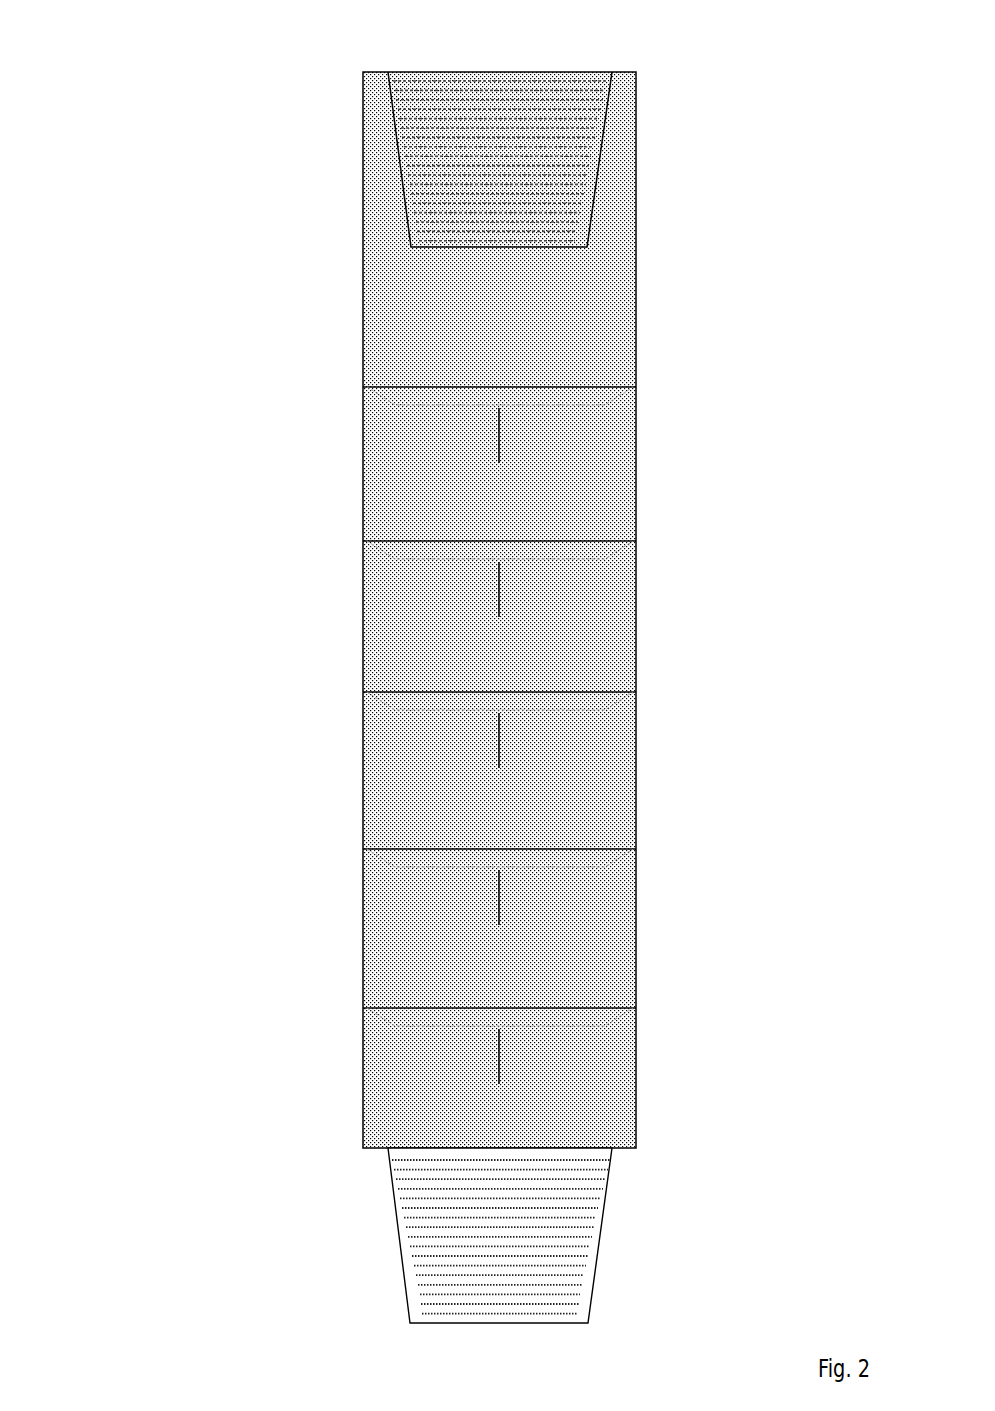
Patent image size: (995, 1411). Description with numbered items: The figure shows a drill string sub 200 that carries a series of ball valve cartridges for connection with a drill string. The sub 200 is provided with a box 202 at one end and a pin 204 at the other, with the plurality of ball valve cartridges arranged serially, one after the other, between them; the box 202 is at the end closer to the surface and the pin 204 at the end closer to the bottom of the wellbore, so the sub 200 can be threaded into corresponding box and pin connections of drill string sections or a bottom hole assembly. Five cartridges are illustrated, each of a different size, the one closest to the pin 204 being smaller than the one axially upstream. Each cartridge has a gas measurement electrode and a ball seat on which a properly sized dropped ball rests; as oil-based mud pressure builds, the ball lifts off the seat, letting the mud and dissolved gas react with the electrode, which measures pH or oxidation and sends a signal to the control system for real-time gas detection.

The sub 200 is at (75, 80).
The box 202 is at (405, 205).
The pin 204 is at (404, 1274).